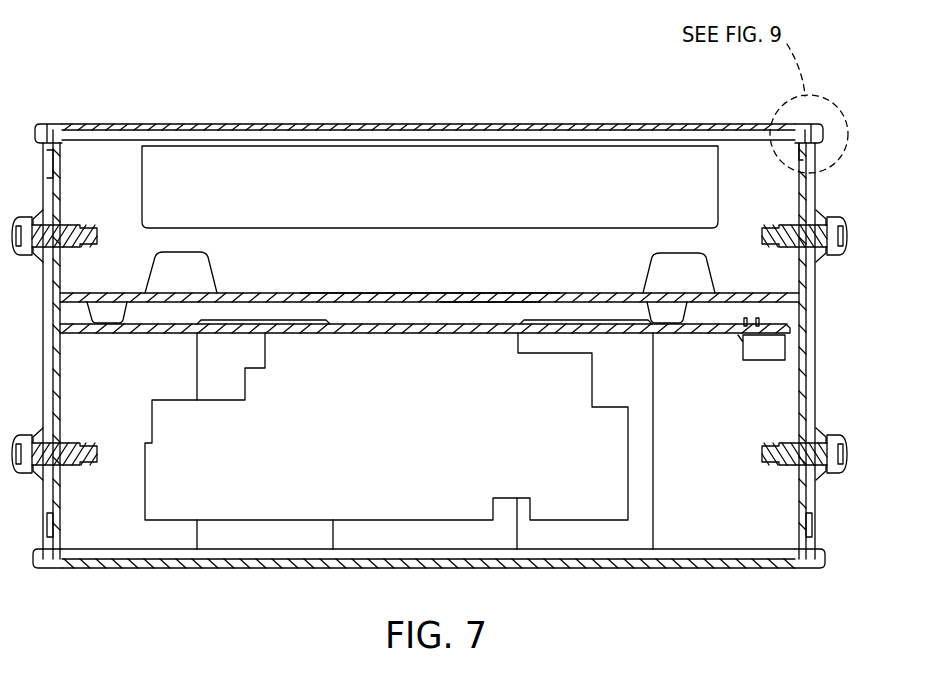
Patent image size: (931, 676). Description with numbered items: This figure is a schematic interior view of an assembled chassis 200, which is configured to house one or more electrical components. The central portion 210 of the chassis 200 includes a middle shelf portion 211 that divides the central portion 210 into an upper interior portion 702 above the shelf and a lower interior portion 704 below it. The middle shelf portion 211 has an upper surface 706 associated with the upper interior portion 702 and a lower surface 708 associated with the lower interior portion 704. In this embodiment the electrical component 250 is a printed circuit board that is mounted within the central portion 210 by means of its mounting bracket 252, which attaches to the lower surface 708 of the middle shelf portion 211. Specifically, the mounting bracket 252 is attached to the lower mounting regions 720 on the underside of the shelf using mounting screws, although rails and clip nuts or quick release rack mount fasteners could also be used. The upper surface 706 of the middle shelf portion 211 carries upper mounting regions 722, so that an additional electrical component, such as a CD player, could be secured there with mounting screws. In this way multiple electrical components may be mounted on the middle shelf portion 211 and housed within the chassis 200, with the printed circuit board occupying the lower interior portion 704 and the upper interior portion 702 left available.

The chassis 200 is at (570, 120).
The central portion 210 is at (812, 343).
The middle shelf portion 211 is at (475, 293).
The electrical component 250 is at (628, 487).
The mounting bracket 252 is at (408, 335).
The upper interior portion 702 is at (112, 167).
The lower interior portion 704 is at (82, 517).
The upper surface 706 is at (364, 292).
The lower surface 708 is at (490, 305).
The lower mounting regions 720 is at (127, 313).
The upper mounting regions 722 is at (213, 272).